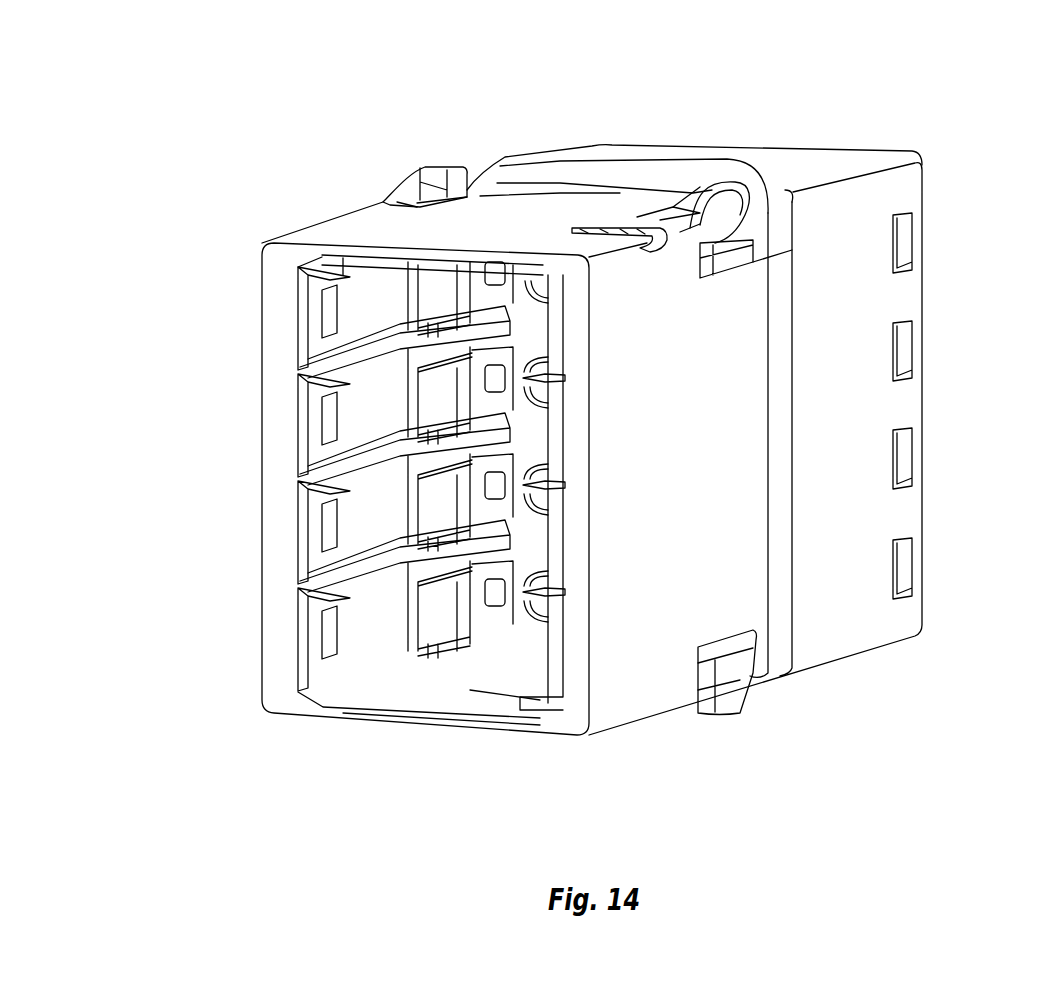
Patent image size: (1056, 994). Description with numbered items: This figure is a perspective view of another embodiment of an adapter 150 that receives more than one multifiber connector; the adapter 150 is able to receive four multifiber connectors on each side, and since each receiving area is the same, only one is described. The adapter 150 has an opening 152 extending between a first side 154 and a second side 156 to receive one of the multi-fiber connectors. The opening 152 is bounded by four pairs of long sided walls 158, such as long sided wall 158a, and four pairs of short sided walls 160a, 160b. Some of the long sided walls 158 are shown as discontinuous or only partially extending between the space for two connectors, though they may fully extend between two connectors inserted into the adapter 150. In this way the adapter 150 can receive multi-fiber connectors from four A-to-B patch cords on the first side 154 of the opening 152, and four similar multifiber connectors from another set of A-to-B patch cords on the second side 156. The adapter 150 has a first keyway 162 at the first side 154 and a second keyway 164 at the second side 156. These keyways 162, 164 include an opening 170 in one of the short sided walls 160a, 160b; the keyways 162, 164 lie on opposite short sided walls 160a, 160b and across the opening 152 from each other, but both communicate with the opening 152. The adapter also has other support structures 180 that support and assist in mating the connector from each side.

The adapter 150 is at (262, 152).
The opening 152 is at (388, 648).
The first side 154 is at (296, 713).
The second side 156 is at (925, 502).
The long sided walls 158 is at (345, 485).
The long sided wall 158a is at (352, 703).
The short sided wall 160a is at (300, 669).
The short sided wall 160b is at (560, 690).
The first keyway 162 is at (322, 641).
The second keyway 164 is at (912, 583).
The opening in short sided wall 170 is at (912, 548).
The support structures 180 is at (512, 612).